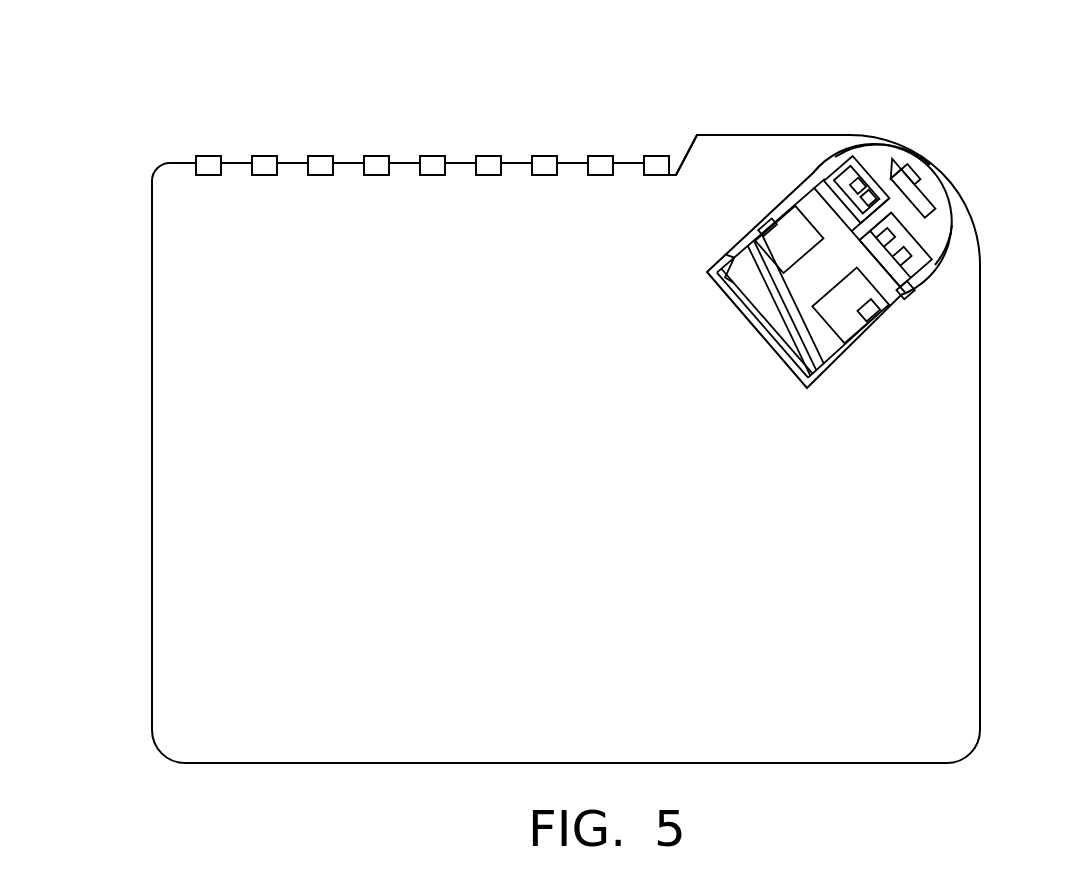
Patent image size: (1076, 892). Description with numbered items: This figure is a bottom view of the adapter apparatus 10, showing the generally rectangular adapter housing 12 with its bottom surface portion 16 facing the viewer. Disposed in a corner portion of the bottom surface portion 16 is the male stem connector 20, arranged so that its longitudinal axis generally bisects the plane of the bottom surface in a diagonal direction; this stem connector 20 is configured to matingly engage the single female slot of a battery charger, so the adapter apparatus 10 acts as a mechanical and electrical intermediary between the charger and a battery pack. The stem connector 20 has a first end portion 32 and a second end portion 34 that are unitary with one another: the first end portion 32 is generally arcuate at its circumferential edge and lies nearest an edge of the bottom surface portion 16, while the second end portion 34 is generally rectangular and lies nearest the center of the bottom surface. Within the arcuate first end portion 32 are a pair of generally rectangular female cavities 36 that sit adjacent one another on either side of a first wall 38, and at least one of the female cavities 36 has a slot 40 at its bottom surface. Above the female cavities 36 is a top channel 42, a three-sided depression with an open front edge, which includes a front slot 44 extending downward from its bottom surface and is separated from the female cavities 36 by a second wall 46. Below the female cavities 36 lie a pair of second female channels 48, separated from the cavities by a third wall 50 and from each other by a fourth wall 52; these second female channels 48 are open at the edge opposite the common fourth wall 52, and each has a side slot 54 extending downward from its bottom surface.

The adapter apparatus 10 is at (795, 72).
The adapter housing 12 is at (718, 133).
The bottom surface portion 16 is at (428, 287).
The male stem connector 20 is at (890, 128).
The first end portion 32 is at (960, 227).
The second end portion 34 is at (846, 360).
The female cavities 36 is at (817, 183).
The first wall 38 is at (912, 183).
The slot 40 is at (905, 288).
The top channel 42 is at (935, 195).
The front slot 44 is at (903, 180).
The second wall 46 is at (890, 173).
The second female channels 48 is at (740, 300).
The third wall 50 is at (842, 240).
The fourth wall 52 is at (770, 330).
The side slot 54 is at (765, 238).